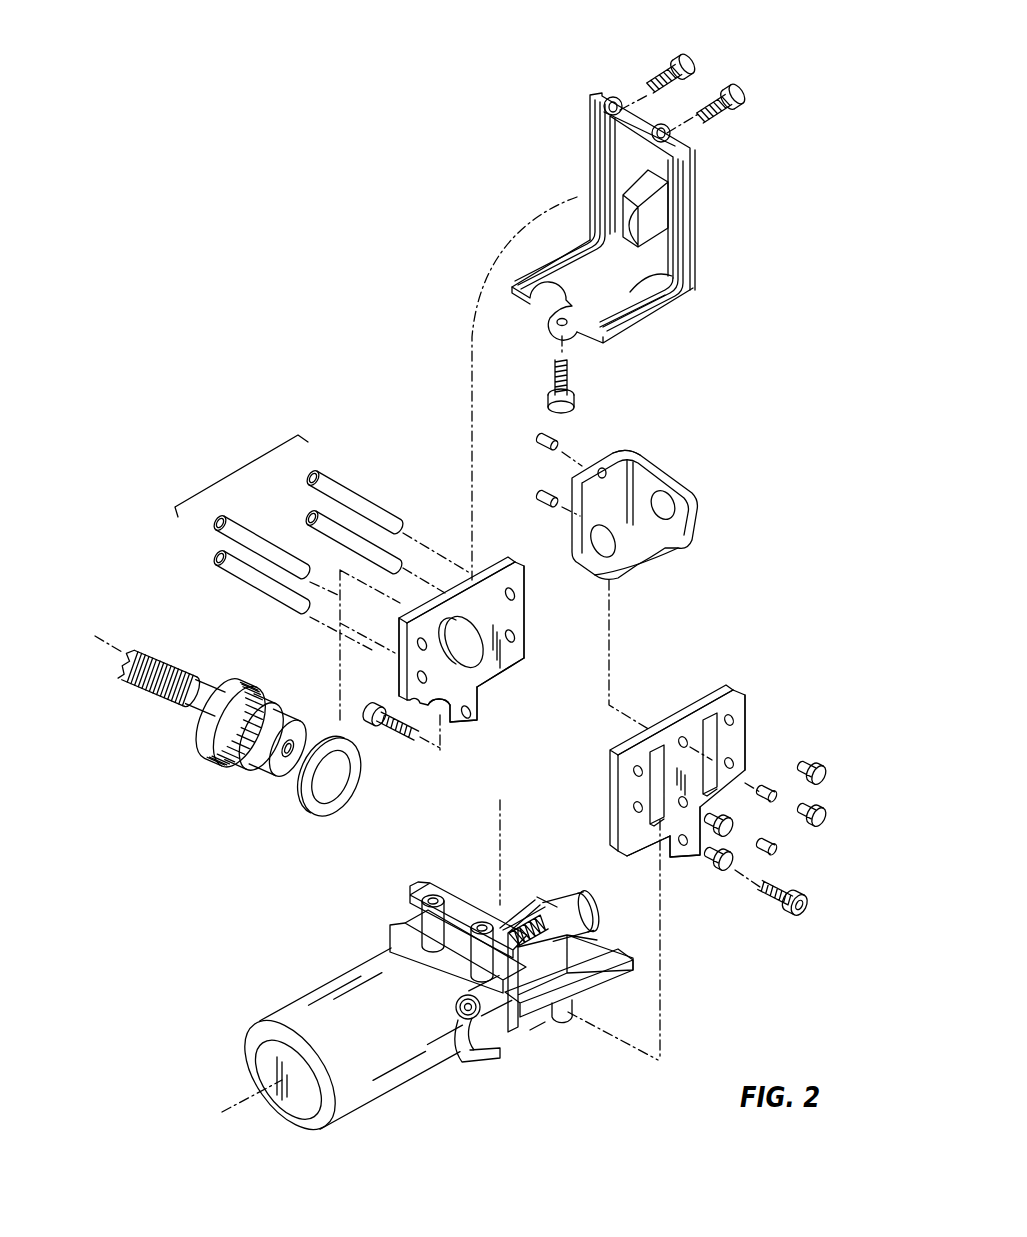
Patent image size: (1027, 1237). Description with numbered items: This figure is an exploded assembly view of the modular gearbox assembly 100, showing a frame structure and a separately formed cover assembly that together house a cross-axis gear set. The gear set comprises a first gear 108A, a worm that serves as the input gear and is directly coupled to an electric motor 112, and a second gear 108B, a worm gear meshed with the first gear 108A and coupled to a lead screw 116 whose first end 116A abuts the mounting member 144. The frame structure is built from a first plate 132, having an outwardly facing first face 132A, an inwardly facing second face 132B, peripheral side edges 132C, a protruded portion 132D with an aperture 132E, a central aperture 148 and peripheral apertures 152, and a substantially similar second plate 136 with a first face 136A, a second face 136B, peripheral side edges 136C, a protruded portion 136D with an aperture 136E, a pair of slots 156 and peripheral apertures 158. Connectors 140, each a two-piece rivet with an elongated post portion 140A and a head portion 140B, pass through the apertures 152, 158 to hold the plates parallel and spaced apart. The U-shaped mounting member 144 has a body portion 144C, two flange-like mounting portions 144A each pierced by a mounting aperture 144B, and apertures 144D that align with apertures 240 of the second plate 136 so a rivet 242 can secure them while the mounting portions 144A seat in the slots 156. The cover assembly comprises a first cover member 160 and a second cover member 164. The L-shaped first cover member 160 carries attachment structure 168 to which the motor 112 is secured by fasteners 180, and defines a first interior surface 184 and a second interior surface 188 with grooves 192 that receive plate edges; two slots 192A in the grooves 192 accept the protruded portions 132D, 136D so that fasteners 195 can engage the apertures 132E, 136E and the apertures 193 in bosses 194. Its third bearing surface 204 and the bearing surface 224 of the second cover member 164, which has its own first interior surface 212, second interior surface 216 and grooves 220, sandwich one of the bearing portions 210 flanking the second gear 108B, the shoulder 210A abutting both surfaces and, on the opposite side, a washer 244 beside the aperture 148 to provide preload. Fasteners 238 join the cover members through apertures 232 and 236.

The modular gearbox assembly 100 is at (205, 385).
The first gear 108A is at (503, 930).
The second gear 108B is at (221, 757).
The electric motor 112 is at (300, 1017).
The lead screw 116 is at (153, 696).
The first end of the lead screw 116A is at (308, 732).
The first plate 132 is at (453, 573).
The first face of the first plate 132A is at (496, 563).
The second face of the first plate 132B is at (517, 612).
The peripheral side edges of the first plate 132C is at (395, 645).
The protruded portion of the first plate 132D is at (480, 712).
The aperture of the protruded portion of the first plate 132E is at (468, 723).
The second plate 136 is at (774, 684).
The first face of the second plate 136A is at (734, 765).
The second face of the second plate 136B is at (673, 717).
The peripheral side edges of the second plate 136C is at (748, 695).
The protruded portion of the second plate 136D is at (668, 852).
The aperture of the protruded portion of the second plate 136E is at (695, 845).
The connectors 140 is at (232, 473).
The post portion 140A is at (357, 537).
The head portion 140B is at (828, 815).
The mounting member 144 is at (694, 459).
The mounting portions 144A is at (623, 567).
The mounting aperture 144B is at (623, 543).
The body portion 144C is at (615, 488).
The apertures of the mounting member 144D is at (605, 468).
The aperture 148 is at (524, 573).
The peripherally-located apertures of the first plate 152 is at (516, 594).
The slots 156 is at (733, 722).
The peripherally-located apertures of the second plate 158 is at (635, 806).
The first cover member 160 is at (400, 925).
The second cover member 164 is at (695, 205).
The attachment structure 168 is at (500, 1040).
The fasteners 180 is at (456, 1012).
The first interior surface of the first cover member 184 is at (600, 940).
The second interior surface of the first cover member 188 is at (433, 884).
The grooves 192 is at (523, 912).
The slots of the first cover member 192A is at (590, 988).
The apertures of the bosses 193 is at (566, 1015).
The bosses 194 is at (540, 1030).
The fasteners 195 is at (380, 728).
The third bearing surface 204 is at (548, 948).
The bearing portions 210 is at (273, 723).
The shoulder 210A is at (250, 683).
The first interior surface of the second cover member 212 is at (623, 155).
The second interior surface of the second cover member 216 is at (670, 287).
The grooves 220 is at (633, 292).
The bearing surface 224 is at (638, 223).
The apertures of the second cover member 232 is at (660, 125).
The apertures of the first cover member 236 is at (478, 930).
The fasteners 238 is at (733, 80).
The apertures of the second plate 240 is at (680, 745).
The rivet 242 is at (545, 445).
The washer 244 is at (328, 808).